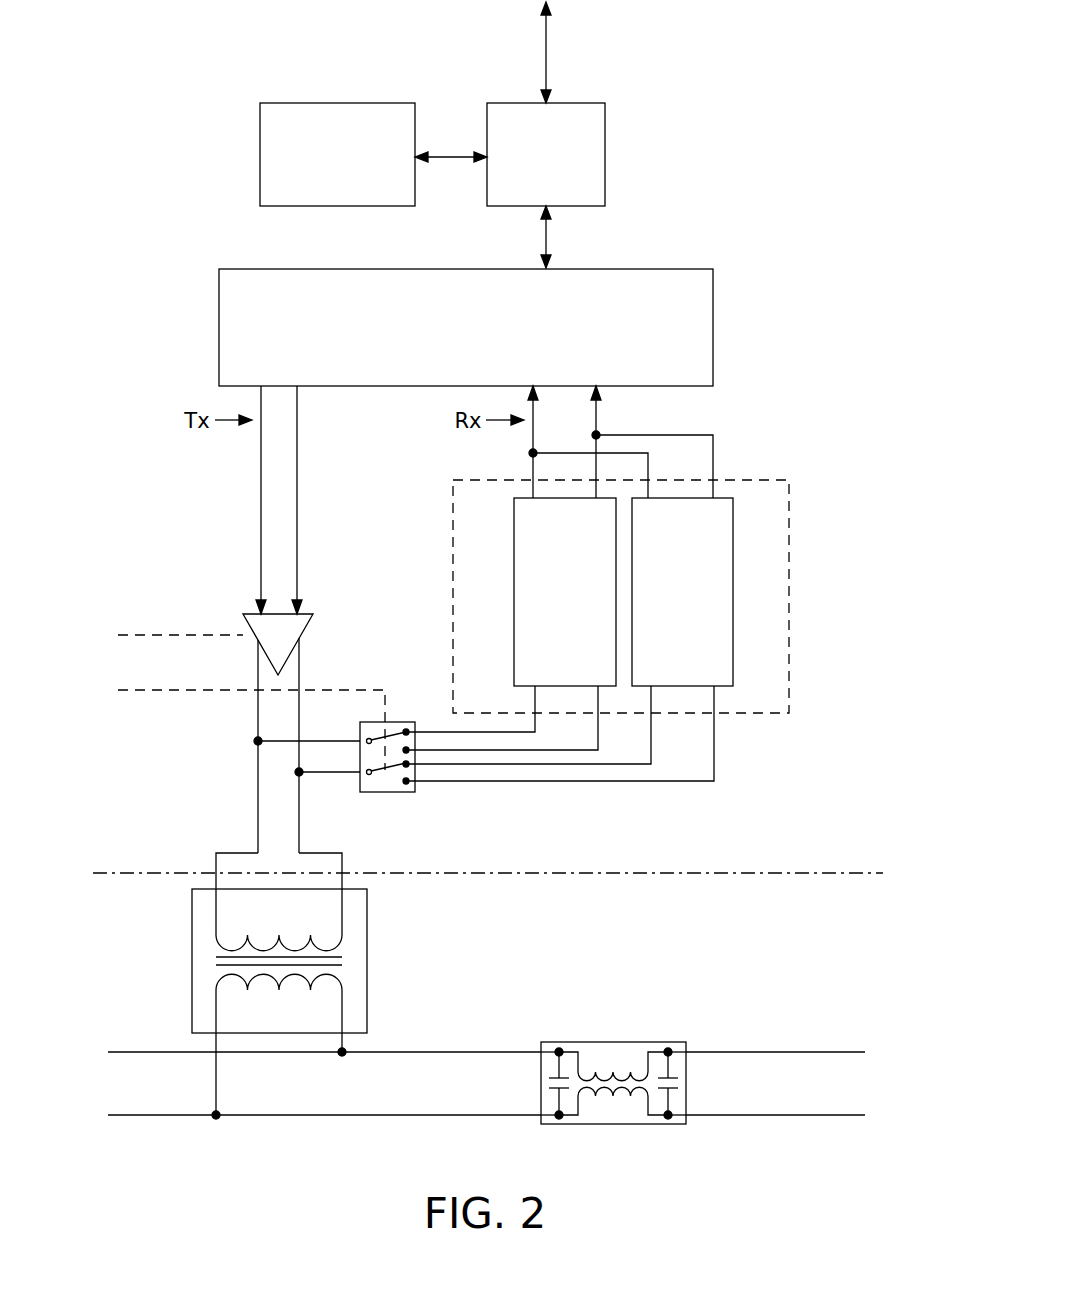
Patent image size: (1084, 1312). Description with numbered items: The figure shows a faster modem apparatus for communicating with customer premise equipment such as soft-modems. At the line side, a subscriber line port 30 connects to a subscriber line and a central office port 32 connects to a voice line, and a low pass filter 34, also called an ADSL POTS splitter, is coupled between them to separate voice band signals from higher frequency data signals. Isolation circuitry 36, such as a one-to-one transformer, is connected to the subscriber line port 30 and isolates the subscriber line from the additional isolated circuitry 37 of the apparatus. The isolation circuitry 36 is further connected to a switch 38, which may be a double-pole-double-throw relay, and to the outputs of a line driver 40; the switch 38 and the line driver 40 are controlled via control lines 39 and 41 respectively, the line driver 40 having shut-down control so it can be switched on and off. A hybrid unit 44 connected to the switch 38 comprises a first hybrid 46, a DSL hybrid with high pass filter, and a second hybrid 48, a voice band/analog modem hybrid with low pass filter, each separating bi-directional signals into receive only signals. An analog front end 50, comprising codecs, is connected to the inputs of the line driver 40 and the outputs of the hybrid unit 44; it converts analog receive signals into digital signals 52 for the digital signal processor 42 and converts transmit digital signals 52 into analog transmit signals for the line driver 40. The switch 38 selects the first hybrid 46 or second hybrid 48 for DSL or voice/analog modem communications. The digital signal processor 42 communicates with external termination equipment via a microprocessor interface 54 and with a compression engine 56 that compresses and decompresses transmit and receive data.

The subscriber line port 30 is at (94, 1083).
The central office port 32 is at (878, 1087).
The low pass filter 34 is at (613, 1042).
The isolation circuitry 36 is at (192, 960).
The additional isolated circuitry 37 is at (107, 836).
The switch 38 is at (397, 792).
The control line 39 is at (158, 690).
The line driver 40 is at (307, 630).
The line driver control line 41 is at (140, 635).
The digital signal processor 42 is at (605, 128).
The hybrid unit 44 is at (770, 480).
The first hybrid 46 is at (565, 592).
The second hybrid 48 is at (682, 592).
The analog front end 50 is at (215, 773).
The digital signals 52 is at (547, 240).
The microprocessor interface 54 is at (547, 38).
The compression engine 56 is at (260, 118).